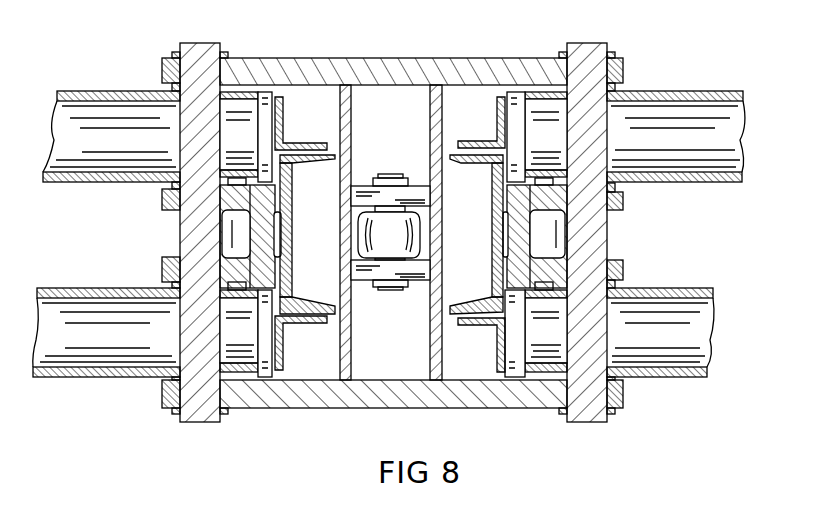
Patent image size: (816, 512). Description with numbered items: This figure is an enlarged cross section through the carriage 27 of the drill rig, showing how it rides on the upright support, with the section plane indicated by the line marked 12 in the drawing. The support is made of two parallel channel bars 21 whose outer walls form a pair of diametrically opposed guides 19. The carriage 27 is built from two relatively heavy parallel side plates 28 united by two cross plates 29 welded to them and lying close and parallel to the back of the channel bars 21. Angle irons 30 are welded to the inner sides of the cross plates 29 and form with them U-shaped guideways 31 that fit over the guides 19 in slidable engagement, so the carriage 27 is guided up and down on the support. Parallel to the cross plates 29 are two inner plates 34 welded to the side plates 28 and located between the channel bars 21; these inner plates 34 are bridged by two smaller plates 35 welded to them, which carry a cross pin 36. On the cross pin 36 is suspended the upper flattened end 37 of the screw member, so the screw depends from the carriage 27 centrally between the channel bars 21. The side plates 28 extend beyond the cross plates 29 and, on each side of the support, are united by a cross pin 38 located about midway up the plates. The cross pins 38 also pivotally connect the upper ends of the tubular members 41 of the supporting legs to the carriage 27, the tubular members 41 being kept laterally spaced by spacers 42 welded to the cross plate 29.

The axis / bolt 12 is at (688, 232).
The guides 19 is at (278, 291).
The channel bars 21 is at (290, 247).
The carriage 27 is at (389, 234).
The side plates 28 is at (352, 78).
The cross plates 29 is at (268, 149).
The angle irons 30 is at (283, 122).
The U-shaped guideways 31 is at (286, 185).
The inner plates 34 is at (430, 110).
The smaller plates 35 is at (364, 197).
The cross pin 36 is at (397, 178).
The upper flattened end 37 is at (389, 233).
The cross pin 38 is at (214, 412).
The tubular members 41 is at (389, 234).
The spacers 42 is at (162, 200).